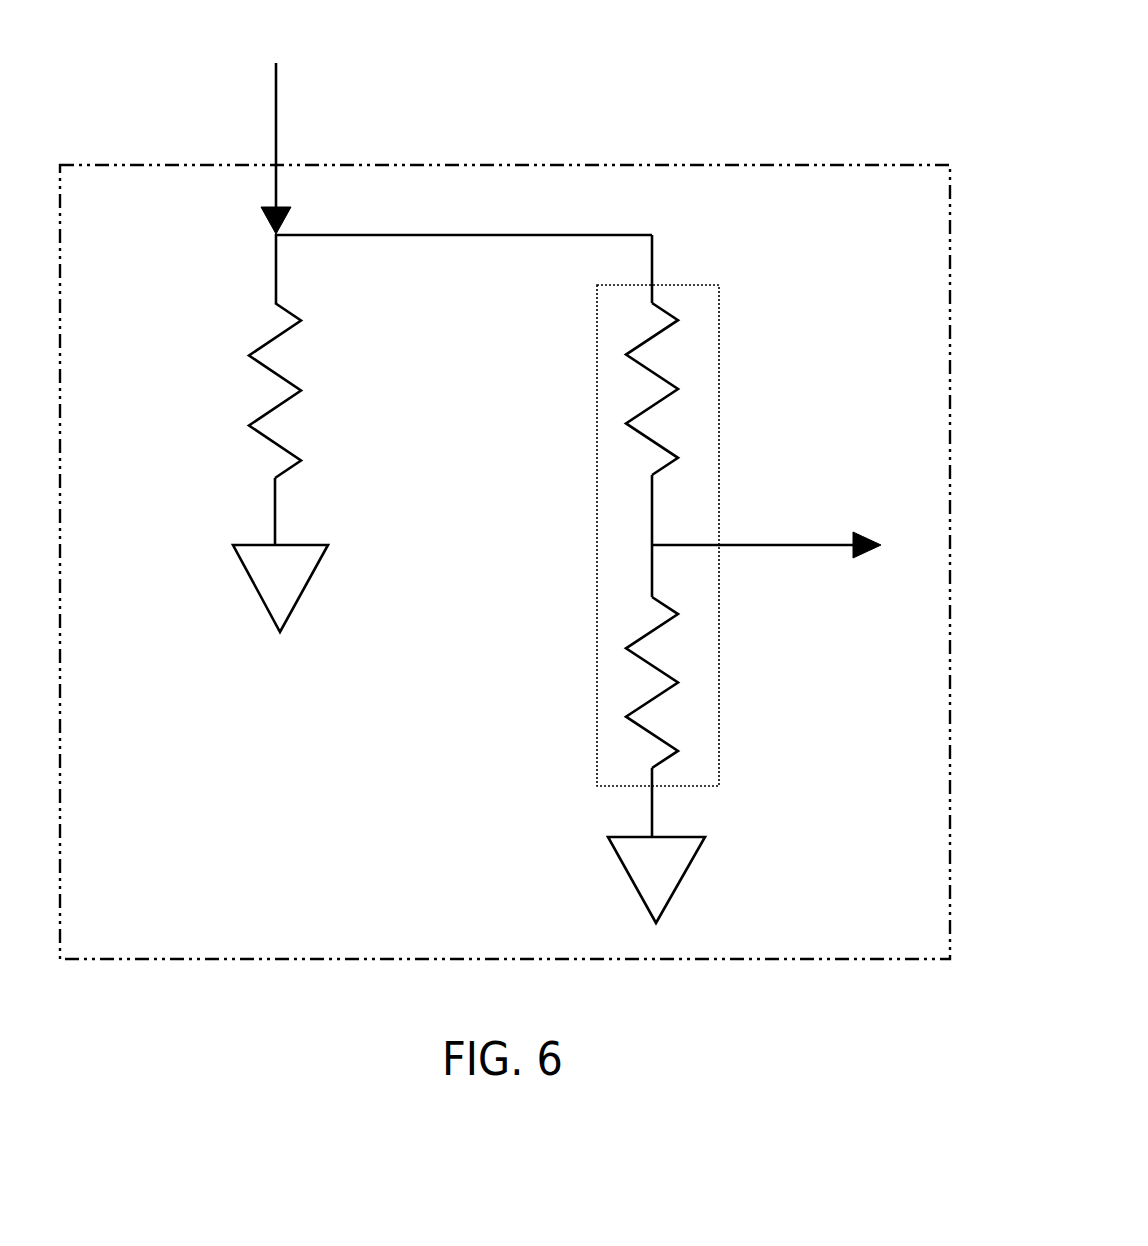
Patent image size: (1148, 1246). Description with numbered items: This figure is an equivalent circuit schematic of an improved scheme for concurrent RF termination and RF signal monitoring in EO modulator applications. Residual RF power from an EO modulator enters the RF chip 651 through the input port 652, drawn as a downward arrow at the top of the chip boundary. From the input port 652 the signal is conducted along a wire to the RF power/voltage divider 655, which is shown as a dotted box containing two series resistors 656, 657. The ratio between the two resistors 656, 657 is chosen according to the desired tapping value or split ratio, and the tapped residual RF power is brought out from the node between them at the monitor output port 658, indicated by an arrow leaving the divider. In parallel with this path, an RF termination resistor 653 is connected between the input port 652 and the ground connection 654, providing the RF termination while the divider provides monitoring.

The RF chip 651 is at (710, 152).
The input port 652 is at (288, 133).
The RF termination resistor 653 is at (250, 392).
The ground connection 654 is at (235, 580).
The RF power/voltage divider 655 is at (580, 402).
The resistor 656 is at (692, 407).
The resistor 657 is at (663, 717).
The monitor output port 658 is at (760, 543).